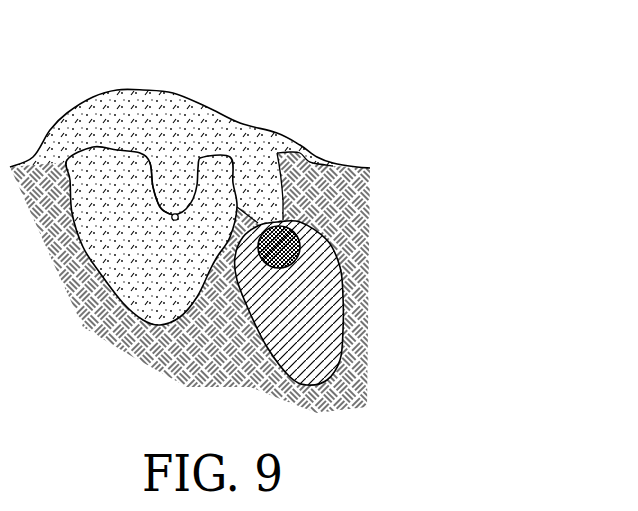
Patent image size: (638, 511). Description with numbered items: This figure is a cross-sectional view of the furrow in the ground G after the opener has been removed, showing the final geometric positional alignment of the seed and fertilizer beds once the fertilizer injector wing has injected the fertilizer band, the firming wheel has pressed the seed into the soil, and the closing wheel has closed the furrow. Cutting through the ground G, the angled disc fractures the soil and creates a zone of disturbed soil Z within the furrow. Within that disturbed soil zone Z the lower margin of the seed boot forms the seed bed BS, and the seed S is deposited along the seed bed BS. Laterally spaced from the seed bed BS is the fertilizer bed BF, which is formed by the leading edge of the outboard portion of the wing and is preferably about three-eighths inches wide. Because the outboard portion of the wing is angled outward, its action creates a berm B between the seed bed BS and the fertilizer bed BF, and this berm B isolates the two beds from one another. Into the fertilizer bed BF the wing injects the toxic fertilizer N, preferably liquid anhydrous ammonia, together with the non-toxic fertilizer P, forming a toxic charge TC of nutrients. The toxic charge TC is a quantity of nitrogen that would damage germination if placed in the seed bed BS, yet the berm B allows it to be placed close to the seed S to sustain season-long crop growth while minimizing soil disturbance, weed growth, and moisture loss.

The fertilizer bed BF is at (267, 203).
The seed bed BS is at (170, 198).
The berm B is at (228, 190).
The toxic charge TC is at (318, 213).
The ground G is at (357, 167).
The zone of disturbed soil Z is at (100, 212).
The seed S is at (166, 220).
The non-toxic fertilizer P is at (300, 243).
The toxic fertilizer N is at (330, 325).